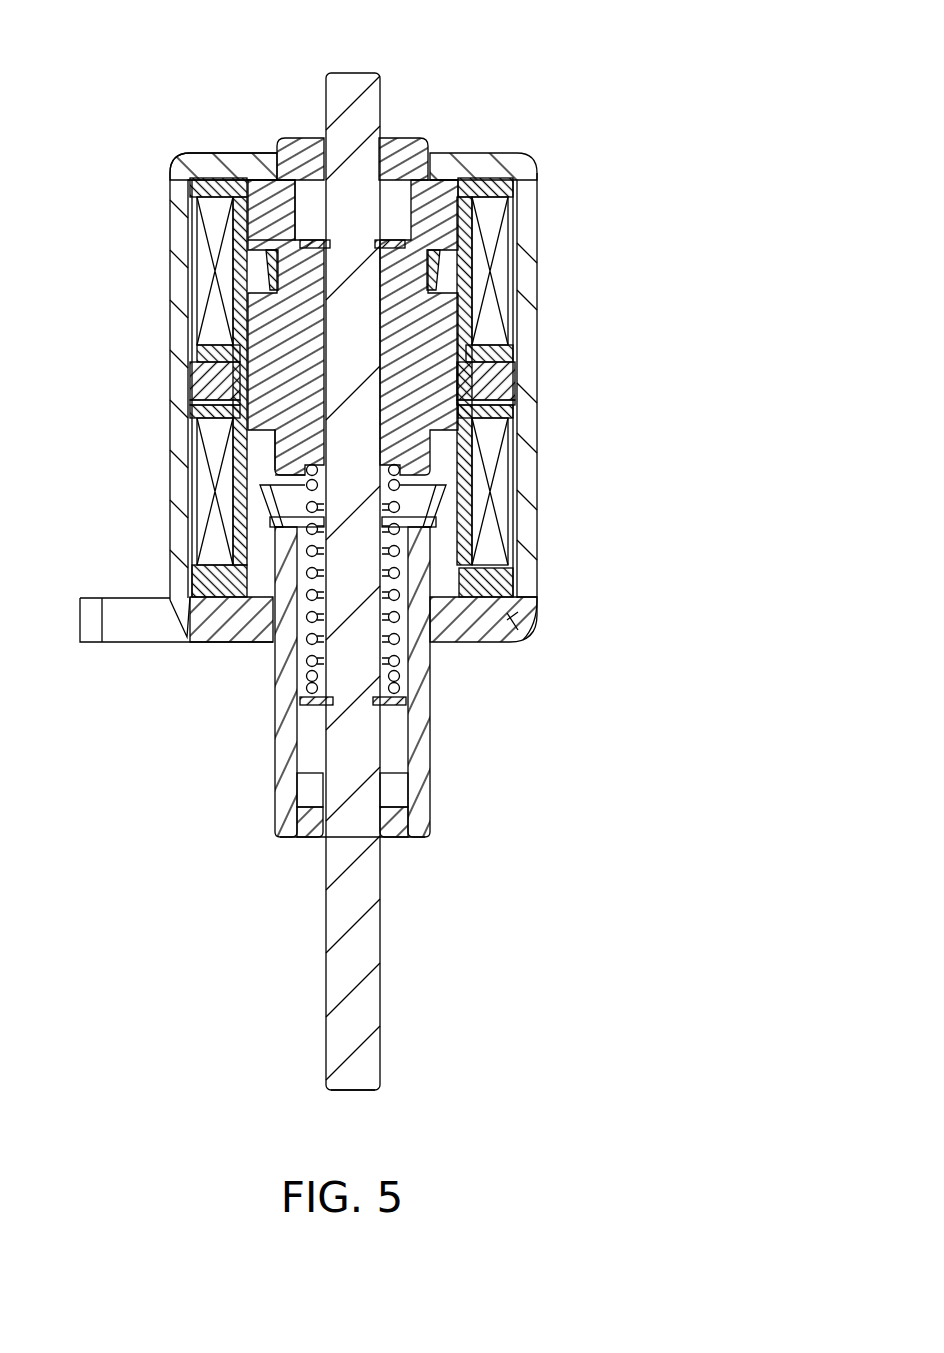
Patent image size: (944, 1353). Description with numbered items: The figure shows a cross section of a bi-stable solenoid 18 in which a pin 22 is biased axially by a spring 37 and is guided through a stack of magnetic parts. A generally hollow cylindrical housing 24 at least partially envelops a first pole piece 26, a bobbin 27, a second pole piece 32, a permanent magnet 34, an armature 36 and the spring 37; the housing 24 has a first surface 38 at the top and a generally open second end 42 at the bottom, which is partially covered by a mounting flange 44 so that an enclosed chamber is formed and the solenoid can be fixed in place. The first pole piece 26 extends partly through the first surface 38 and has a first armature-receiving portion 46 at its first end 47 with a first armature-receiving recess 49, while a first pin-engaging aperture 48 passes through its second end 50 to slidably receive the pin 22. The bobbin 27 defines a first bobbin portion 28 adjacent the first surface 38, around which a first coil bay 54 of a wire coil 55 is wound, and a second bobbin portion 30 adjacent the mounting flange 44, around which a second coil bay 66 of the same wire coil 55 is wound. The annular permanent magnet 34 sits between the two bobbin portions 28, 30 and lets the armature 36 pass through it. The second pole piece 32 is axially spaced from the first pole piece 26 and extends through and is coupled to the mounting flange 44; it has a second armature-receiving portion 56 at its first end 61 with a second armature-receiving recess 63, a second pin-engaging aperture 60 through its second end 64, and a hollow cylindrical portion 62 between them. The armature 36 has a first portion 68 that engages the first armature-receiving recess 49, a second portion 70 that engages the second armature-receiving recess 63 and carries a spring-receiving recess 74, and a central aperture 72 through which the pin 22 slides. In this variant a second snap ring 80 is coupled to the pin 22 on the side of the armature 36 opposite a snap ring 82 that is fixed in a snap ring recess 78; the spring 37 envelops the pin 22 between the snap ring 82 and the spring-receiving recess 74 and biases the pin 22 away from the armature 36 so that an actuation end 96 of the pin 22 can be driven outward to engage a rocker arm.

The bi-stable solenoid 18 is at (560, 56).
The pin 22 is at (363, 949).
The housing 24 is at (538, 288).
The first pole piece 26 is at (513, 186).
The bobbin 27 is at (206, 194).
The first bobbin portion 28 is at (513, 185).
The second bobbin portion 30 is at (498, 581).
The second pole piece 32 is at (279, 574).
The permanent magnet 34 is at (208, 372).
The armature 36 is at (270, 318).
The spring 37 is at (308, 678).
The first surface 38 is at (213, 153).
The open second end 42 is at (186, 655).
The mounting flange 44 is at (150, 613).
The first armature-receiving portion 46 is at (428, 271).
The first end 47 is at (262, 275).
The first pin-engaging aperture 48 is at (389, 239).
The first armature-receiving recess 49 is at (297, 236).
The second end 50 is at (291, 125).
The first coil bay 54 is at (207, 252).
The wire coil 55 is at (515, 224).
The second armature-receiving portion 56 is at (265, 473).
The second pin-engaging aperture 60 is at (326, 818).
The first end 61 is at (254, 491).
The hollow cylindrical portion 62 is at (441, 758).
The second armature-receiving recess 63 is at (436, 513).
The second end 64 is at (446, 825).
The second coil bay 66 is at (497, 497).
The first portion 68 is at (281, 246).
The second portion 70 is at (283, 447).
The central aperture 72 is at (382, 328).
The spring-receiving recess 74 is at (458, 401).
The snap ring recess 78 is at (381, 703).
The second snap ring 80 is at (433, 195).
The snap ring 82 is at (316, 705).
The actuation end 96 is at (352, 1092).